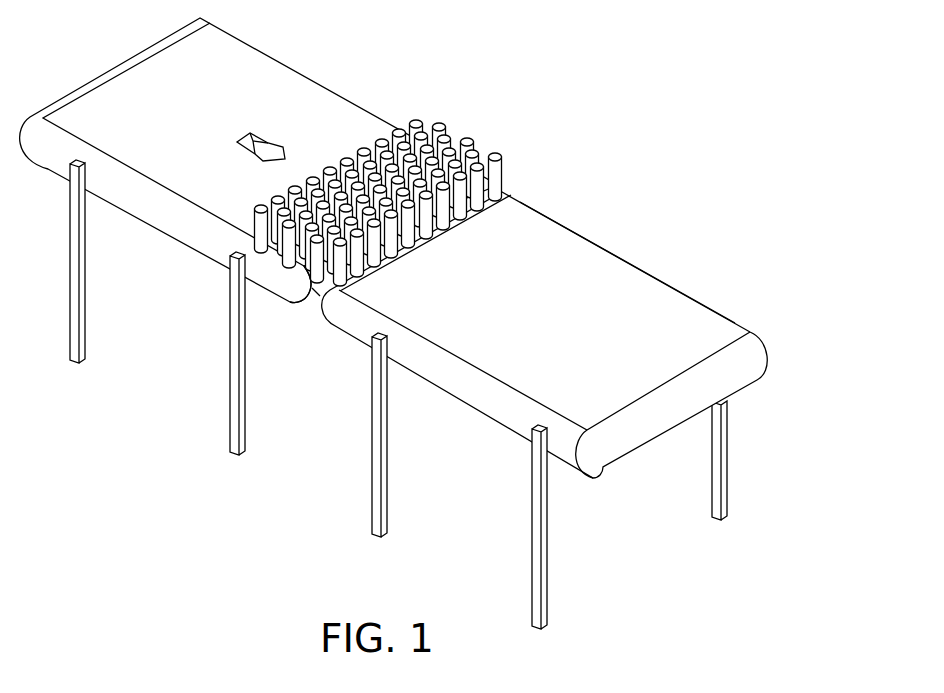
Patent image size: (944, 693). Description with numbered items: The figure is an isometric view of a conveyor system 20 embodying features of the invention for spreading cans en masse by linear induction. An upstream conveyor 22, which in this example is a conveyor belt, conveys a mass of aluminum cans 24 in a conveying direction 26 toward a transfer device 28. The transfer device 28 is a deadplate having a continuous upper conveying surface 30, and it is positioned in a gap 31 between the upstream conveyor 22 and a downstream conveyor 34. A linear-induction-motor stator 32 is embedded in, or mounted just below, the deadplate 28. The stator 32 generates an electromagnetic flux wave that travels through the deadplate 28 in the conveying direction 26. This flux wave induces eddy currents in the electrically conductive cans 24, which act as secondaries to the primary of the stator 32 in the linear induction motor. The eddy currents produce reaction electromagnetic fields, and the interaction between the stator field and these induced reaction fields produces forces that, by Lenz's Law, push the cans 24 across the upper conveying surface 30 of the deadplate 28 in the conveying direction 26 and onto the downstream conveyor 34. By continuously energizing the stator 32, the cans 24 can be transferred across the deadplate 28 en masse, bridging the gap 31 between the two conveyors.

The conveyor system 20 is at (565, 48).
The upstream conveyor 22 is at (250, 53).
The aluminum cans 24 is at (428, 113).
The conveying direction 26 is at (263, 138).
The transfer device 28 is at (502, 188).
The upper conveying surface 30 is at (314, 293).
The gap 31 is at (309, 302).
The linear-induction-motor (LIM) stator 32 is at (312, 296).
The downstream conveyor 34 is at (623, 272).